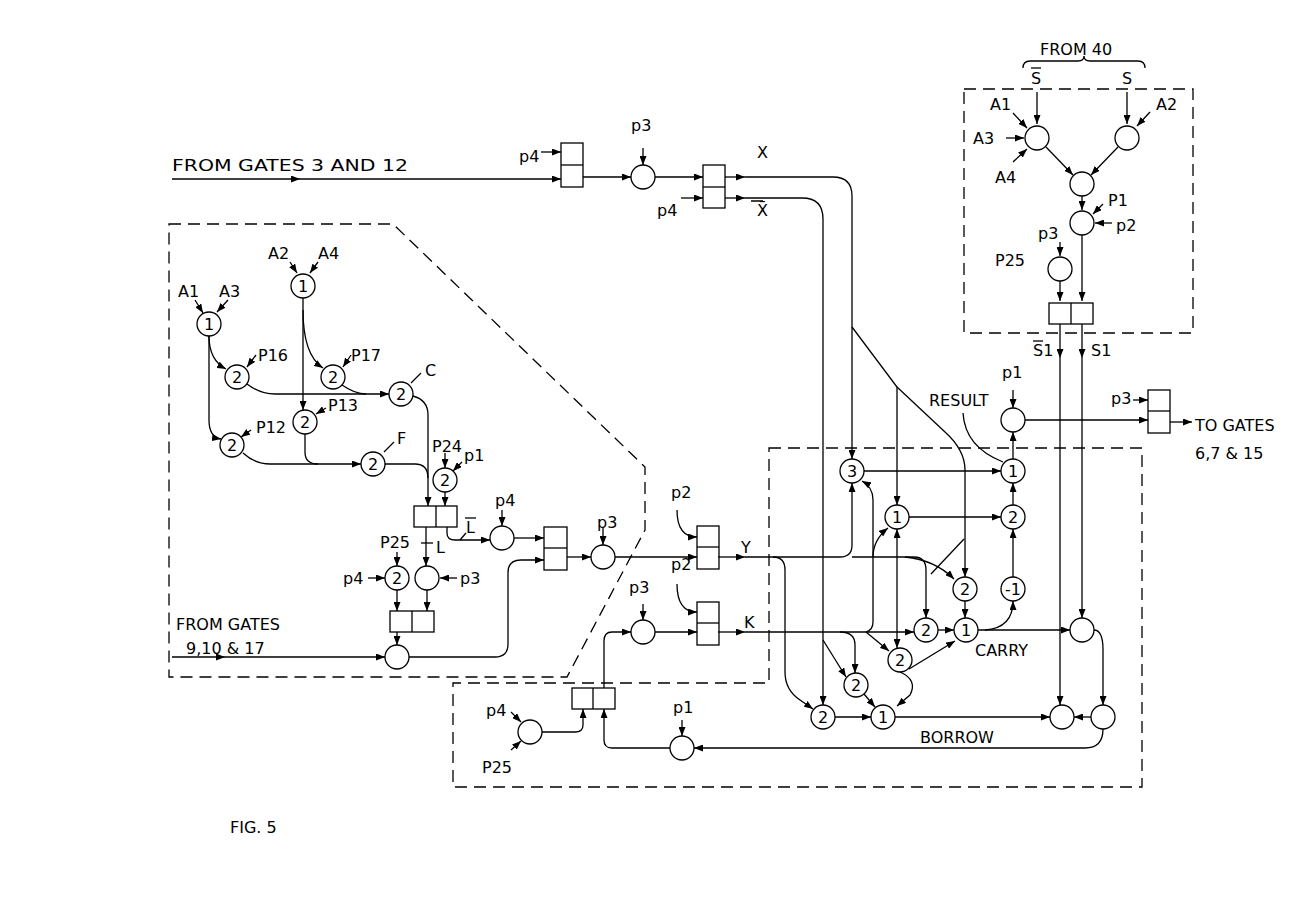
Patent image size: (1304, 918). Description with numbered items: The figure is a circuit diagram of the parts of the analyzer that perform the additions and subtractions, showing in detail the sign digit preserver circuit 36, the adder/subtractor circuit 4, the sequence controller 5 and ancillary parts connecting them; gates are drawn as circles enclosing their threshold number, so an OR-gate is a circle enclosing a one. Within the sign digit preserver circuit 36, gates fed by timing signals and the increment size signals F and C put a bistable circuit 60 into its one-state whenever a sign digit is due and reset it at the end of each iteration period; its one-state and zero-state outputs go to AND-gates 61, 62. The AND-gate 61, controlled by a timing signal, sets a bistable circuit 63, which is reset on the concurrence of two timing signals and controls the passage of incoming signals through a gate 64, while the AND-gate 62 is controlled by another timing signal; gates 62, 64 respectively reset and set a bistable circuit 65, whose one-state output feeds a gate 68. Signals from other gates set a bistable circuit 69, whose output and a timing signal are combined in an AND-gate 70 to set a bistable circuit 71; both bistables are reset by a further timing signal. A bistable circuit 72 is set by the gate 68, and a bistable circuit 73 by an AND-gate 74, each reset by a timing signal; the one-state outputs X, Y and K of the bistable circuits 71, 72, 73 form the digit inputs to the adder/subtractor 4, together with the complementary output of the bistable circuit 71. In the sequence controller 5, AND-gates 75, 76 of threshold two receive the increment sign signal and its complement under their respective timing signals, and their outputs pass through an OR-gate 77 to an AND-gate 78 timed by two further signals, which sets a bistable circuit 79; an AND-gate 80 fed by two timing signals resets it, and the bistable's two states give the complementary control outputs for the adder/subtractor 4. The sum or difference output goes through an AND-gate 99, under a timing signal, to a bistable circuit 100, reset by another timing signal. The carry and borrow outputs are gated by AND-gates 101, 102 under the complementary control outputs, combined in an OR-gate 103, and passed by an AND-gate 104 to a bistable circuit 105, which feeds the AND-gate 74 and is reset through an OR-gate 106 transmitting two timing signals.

The adder/subtractor circuit 4 is at (1142, 560).
The sequence controller 5 is at (965, 262).
The sign digit preserver circuit 36 is at (528, 347).
The bistable circuit 60 is at (414, 515).
The AND-gate 61 is at (436, 589).
The AND-gate 62 is at (511, 530).
The bistable circuit 63 is at (390, 624).
The gate 64 is at (408, 664).
The bistable circuit 65 is at (556, 527).
The gate 68 is at (596, 568).
The bistable circuit 69 is at (572, 187).
The AND-gate 70 is at (652, 168).
The bistable circuit 71 is at (713, 165).
The bistable circuit 72 is at (719, 528).
The bistable circuit 73 is at (705, 645).
The AND-gate 74 is at (640, 644).
The AND-gate 75 is at (1139, 138).
The AND-gate 76 is at (1049, 138).
The OR-gate 77 is at (1094, 184).
The AND-gate 78 is at (1089, 234).
The bistable circuit 79 is at (1093, 314).
The AND-gate 80 is at (1051, 277).
The AND-gate 99 is at (1022, 411).
The bistable circuit 100 is at (1170, 396).
The AND-gate 101 is at (1090, 621).
The AND-gate 102 is at (1053, 708).
The OR-gate 103 is at (1111, 726).
The AND-gate 104 is at (691, 740).
The bistable circuit 105 is at (615, 700).
The OR-gate 106 is at (539, 741).